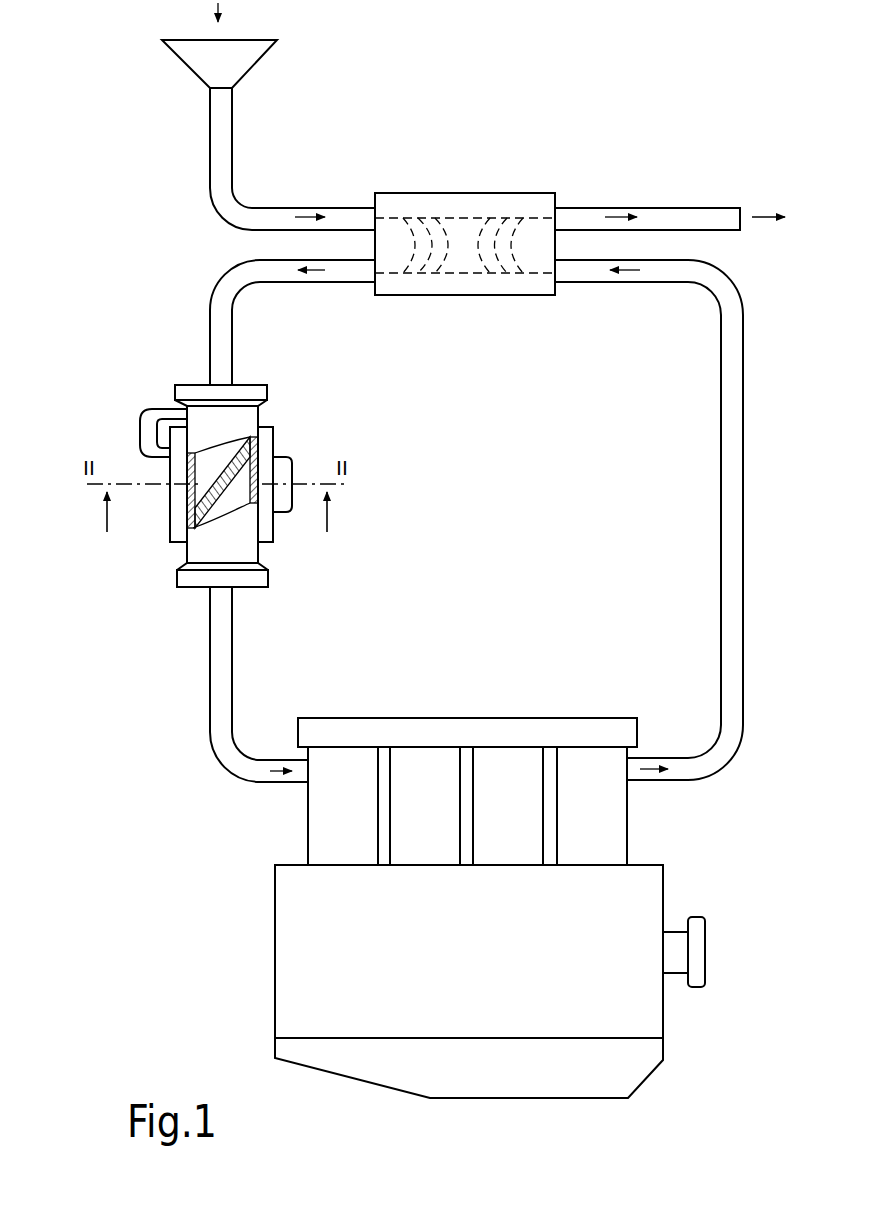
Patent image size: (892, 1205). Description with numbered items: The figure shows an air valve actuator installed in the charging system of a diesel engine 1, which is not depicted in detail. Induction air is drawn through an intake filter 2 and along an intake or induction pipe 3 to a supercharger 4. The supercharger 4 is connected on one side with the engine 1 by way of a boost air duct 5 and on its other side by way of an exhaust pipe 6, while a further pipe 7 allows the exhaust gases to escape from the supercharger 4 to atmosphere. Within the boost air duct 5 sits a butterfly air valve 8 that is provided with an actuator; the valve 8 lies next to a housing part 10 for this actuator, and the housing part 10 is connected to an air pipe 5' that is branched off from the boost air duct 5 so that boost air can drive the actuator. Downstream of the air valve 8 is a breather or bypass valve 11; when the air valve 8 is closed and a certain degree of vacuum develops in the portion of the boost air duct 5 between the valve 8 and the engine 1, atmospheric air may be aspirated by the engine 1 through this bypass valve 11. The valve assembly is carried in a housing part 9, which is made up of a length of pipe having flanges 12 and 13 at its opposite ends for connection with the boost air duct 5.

The diesel engine 1 is at (608, 826).
The intake filter 2 is at (210, 68).
The intake or induction pipe 3 is at (221, 186).
The supercharger 4 is at (496, 205).
The boost air duct 5 is at (292, 322).
The air pipe 5' is at (145, 429).
The exhaust pipe 6 is at (740, 609).
The pipe 7 is at (690, 212).
The butterfly air valve 8 is at (200, 528).
The housing part 9 is at (248, 545).
The housing part for the air valve actuator 10 is at (178, 518).
The breather or bypass valve 11 is at (278, 500).
The flange 12 is at (243, 388).
The flange 13 is at (202, 578).